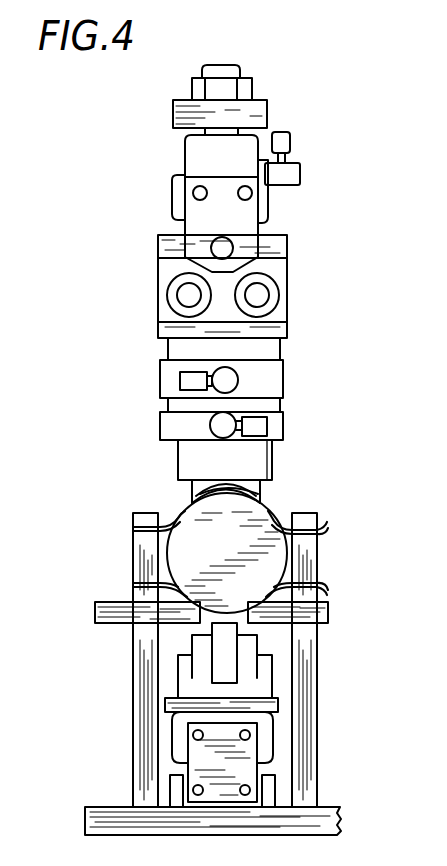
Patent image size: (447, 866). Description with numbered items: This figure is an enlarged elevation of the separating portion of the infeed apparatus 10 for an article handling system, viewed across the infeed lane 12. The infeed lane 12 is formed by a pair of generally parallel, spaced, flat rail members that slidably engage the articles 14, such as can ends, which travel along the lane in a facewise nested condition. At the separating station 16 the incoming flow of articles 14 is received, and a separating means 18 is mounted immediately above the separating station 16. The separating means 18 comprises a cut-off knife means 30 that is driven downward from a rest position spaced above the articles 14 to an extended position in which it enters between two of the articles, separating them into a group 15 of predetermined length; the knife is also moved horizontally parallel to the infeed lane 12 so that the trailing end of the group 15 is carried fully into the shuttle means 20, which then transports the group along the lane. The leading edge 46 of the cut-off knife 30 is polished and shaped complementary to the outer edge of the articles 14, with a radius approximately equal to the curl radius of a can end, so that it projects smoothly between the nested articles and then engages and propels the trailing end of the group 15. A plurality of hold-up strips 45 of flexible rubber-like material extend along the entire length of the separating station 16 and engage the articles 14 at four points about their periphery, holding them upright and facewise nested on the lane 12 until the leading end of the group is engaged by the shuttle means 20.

The infeed apparatus 10 is at (301, 74).
The infeed lane 12 is at (188, 621).
The articles 14 is at (232, 553).
The group of articles 15 is at (163, 557).
The separating station 16 is at (325, 412).
The separating means 18 is at (161, 192).
The shuttle means 20 is at (284, 679).
The cut-off knife means 30 is at (191, 492).
The hold-up strips 45 is at (168, 513).
The leading edge 46 is at (263, 497).